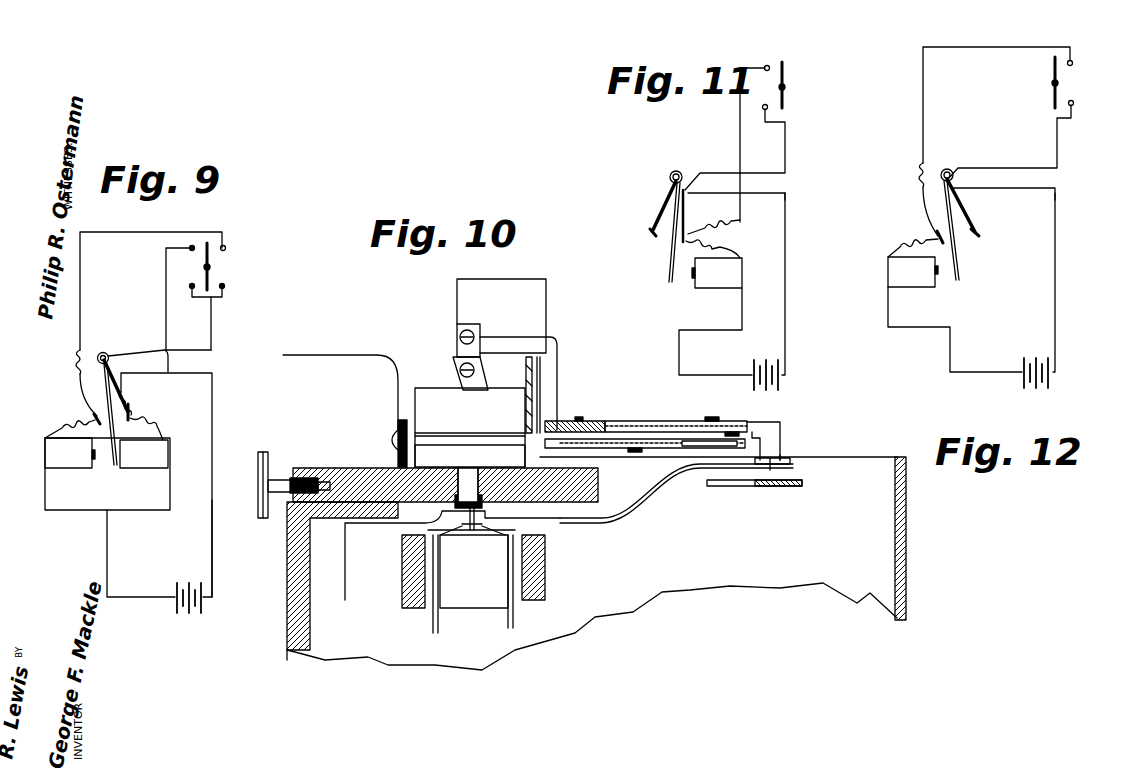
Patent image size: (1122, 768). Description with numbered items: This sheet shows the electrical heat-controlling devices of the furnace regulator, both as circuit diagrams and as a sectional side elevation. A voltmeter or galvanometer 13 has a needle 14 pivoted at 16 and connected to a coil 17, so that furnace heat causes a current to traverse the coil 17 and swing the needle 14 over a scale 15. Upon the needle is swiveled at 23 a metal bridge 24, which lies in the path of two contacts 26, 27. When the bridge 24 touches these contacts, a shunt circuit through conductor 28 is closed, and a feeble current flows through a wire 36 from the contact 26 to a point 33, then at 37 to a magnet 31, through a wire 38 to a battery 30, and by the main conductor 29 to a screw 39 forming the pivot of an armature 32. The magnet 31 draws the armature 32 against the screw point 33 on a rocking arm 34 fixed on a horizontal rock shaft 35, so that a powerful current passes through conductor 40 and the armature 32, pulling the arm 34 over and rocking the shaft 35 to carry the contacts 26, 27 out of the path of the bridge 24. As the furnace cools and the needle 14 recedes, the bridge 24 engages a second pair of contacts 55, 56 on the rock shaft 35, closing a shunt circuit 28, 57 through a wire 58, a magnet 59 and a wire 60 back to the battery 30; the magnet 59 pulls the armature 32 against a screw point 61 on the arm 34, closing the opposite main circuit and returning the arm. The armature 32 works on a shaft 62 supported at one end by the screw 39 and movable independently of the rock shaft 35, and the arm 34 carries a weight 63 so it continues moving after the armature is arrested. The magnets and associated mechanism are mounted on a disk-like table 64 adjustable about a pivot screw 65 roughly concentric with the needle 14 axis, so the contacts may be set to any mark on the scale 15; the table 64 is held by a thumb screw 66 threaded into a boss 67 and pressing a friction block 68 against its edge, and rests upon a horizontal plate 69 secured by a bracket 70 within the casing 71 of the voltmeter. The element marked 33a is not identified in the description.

In FIG. 10, the voltmeter or galvanometer 13 is at (908, 551).
In FIG. 10, the needle 14 is at (651, 494).
In FIG. 10, the scale 15 is at (762, 490).
In FIG. 10, the needle pivot 16 is at (478, 521).
In FIG. 10, the coil 17 is at (506, 578).
In FIG. 9, the swivel 23 is at (212, 267).
In FIG. 11, the swivel 23 is at (785, 88).
In FIG. 12, the swivel 23 is at (1053, 87).
In FIG. 9, the metal bridge 24 is at (212, 258).
In FIG. 11, the metal bridge 24 is at (784, 78).
In FIG. 12, the metal bridge 24 is at (1053, 73).
In FIG. 9, the contact 26 is at (226, 249).
In FIG. 10, the contact 26 is at (782, 441).
In FIG. 12, the contact 26 is at (1073, 64).
In FIG. 9, the contact 27 is at (226, 287).
In FIG. 10, the contact 27 is at (772, 455).
In FIG. 12, the contact 27 is at (1073, 107).
In FIG. 9, the shunt circuit conductor 28 is at (212, 335).
In FIG. 10, the shunt circuit conductor 28 is at (648, 449).
In FIG. 11, the shunt circuit conductor 28 is at (786, 153).
In FIG. 12, the shunt circuit conductor 28 is at (1060, 156).
In FIG. 9, the main circuit conductor 29 is at (213, 500).
In FIG. 11, the main circuit conductor 29 is at (788, 321).
In FIG. 12, the main circuit conductor 29 is at (1058, 313).
In FIG. 9, the battery 30 is at (186, 614).
In FIG. 11, the battery 30 is at (782, 386).
In FIG. 12, the battery 30 is at (1052, 385).
In FIG. 9, the magnet 31 is at (70, 453).
In FIG. 12, the magnet 31 is at (913, 273).
In FIG. 9, the armature 32 is at (113, 466).
In FIG. 10, the armature 32 is at (438, 388).
In FIG. 11, the armature 32 is at (668, 261).
In FIG. 12, the armature 32 is at (959, 261).
In FIG. 9, the screw point 33 is at (94, 418).
In FIG. 10, the screw point 33 is at (467, 378).
In FIG. 11, the screw point 33 is at (652, 236).
In FIG. 12, the screw point 33 is at (932, 237).
In FIG. 10, the bracket 33a is at (461, 340).
In FIG. 9, the rocking arm 34 is at (112, 371).
In FIG. 10, the rocking arm 34 is at (542, 386).
In FIG. 11, the rocking arm 34 is at (668, 185).
In FIG. 12, the rocking arm 34 is at (940, 189).
In FIG. 9, the rock shaft 35 is at (109, 356).
In FIG. 10, the rock shaft 35 is at (564, 426).
In FIG. 11, the rock shaft 35 is at (671, 172).
In FIG. 12, the rock shaft 35 is at (952, 171).
In FIG. 9, the wire 36 is at (81, 300).
In FIG. 10, the wire 36 is at (558, 368).
In FIG. 12, the wire 36 is at (998, 50).
In FIG. 9, the wire 37 is at (62, 428).
In FIG. 12, the wire 37 is at (905, 246).
In FIG. 9, the wire 38 is at (45, 498).
In FIG. 12, the wire 38 is at (890, 319).
In FIG. 9, the pivot screw 39 is at (122, 378).
In FIG. 10, the pivot screw 39 is at (392, 441).
In FIG. 11, the pivot screw 39 is at (660, 211).
In FIG. 12, the pivot screw 39 is at (959, 199).
In FIG. 9, the main circuit conductor 40 is at (176, 373).
In FIG. 10, the main circuit conductor 40 is at (340, 355).
In FIG. 11, the main circuit conductor 40 is at (706, 194).
In FIG. 12, the main circuit conductor 40 is at (992, 191).
In FIG. 9, the contact 55 is at (193, 252).
In FIG. 11, the contact 55 is at (766, 66).
In FIG. 9, the contact 56 is at (191, 289).
In FIG. 11, the contact 56 is at (764, 105).
In FIG. 9, the shunt circuit conductor 57 is at (168, 331).
In FIG. 11, the shunt circuit conductor 57 is at (740, 126).
In FIG. 9, the wire 58 is at (160, 427).
In FIG. 11, the wire 58 is at (728, 251).
In FIG. 9, the magnet 59 is at (144, 454).
In FIG. 11, the magnet 59 is at (717, 273).
In FIG. 9, the wire 60 is at (134, 509).
In FIG. 11, the wire 60 is at (722, 330).
In FIG. 9, the screw point 61 is at (135, 421).
In FIG. 11, the screw point 61 is at (686, 221).
In FIG. 12, the screw point 61 is at (977, 236).
In FIG. 10, the shaft 62 is at (452, 438).
In FIG. 10, the weight 63 is at (518, 279).
In FIG. 10, the table 64 is at (600, 486).
In FIG. 10, the pivot screw 65 is at (483, 469).
In FIG. 10, the thumb screw 66 is at (275, 452).
In FIG. 10, the boss 67 is at (300, 478).
In FIG. 10, the friction block 68 is at (325, 482).
In FIG. 10, the horizontal plate 69 is at (600, 501).
In FIG. 10, the bracket 70 is at (311, 597).
In FIG. 10, the casing 71 is at (296, 639).